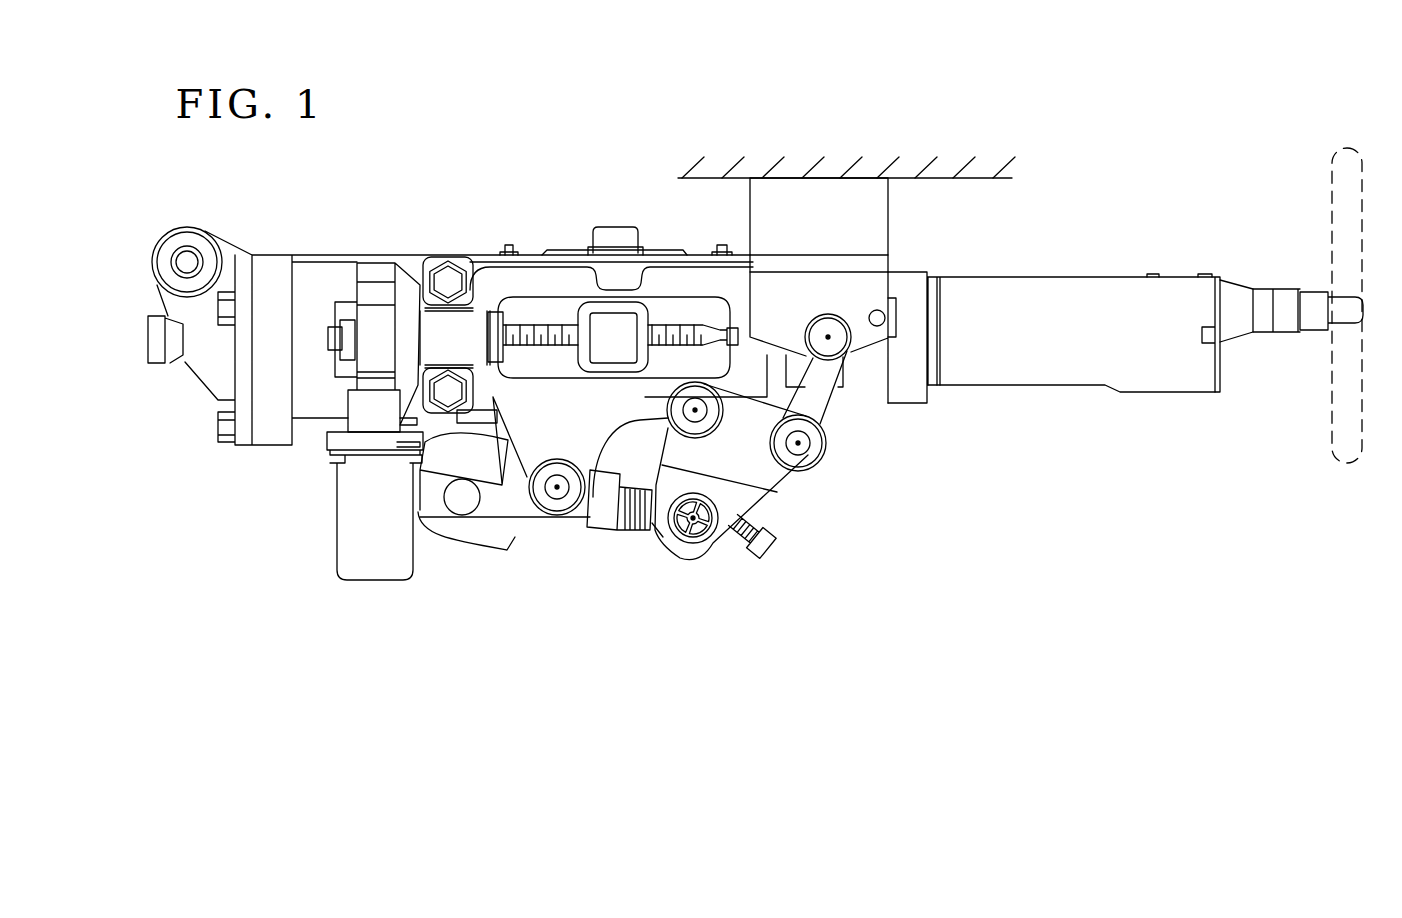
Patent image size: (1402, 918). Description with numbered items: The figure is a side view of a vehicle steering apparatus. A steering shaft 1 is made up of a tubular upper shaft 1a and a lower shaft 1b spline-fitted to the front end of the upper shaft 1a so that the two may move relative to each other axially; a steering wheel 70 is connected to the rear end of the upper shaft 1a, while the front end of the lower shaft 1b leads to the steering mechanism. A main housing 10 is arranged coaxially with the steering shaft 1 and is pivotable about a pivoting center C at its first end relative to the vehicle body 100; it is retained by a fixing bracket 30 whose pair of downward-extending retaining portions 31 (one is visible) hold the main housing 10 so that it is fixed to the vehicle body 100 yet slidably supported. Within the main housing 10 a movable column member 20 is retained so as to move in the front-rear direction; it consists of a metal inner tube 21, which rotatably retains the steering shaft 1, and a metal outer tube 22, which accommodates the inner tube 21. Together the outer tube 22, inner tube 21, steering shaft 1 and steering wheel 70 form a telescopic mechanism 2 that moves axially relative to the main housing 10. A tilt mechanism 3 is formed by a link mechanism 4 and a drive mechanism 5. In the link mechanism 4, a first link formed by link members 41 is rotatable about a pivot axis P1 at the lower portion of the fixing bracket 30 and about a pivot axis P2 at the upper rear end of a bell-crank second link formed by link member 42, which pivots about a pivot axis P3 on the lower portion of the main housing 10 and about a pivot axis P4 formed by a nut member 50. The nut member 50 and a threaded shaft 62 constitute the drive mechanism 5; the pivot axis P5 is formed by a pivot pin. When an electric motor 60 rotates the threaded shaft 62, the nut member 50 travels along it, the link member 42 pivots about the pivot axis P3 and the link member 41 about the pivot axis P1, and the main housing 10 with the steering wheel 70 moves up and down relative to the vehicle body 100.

The steering shaft 1 is at (1239, 278).
The upper shaft 1a is at (1266, 324).
The lower shaft 1b is at (165, 358).
The telescopic mechanism 2 is at (415, 251).
The tilt mechanism 3 is at (859, 481).
The link mechanism 4 is at (834, 458).
The drive mechanism 5 is at (687, 577).
The main housing 10 is at (325, 251).
The movable column member 20 is at (1037, 270).
The inner tube 21 is at (1055, 362).
The outer tube 22 is at (512, 305).
The fixing bracket 30 is at (828, 196).
The retaining portion 31 is at (865, 290).
The link member 41 is at (835, 375).
The link member 42 is at (752, 470).
The nut member 50 is at (703, 542).
The electric motor 60 is at (438, 540).
The threaded shaft 62 is at (623, 517).
The steering wheel 70 is at (1341, 148).
The vehicle body 100 is at (714, 178).
The pivoting center C is at (187, 262).
The pivot axis P1 is at (828, 337).
The pivot axis P2 is at (798, 443).
The pivot axis P3 is at (695, 410).
The pivot axis P4 is at (693, 518).
The pivot axis P5 is at (557, 487).